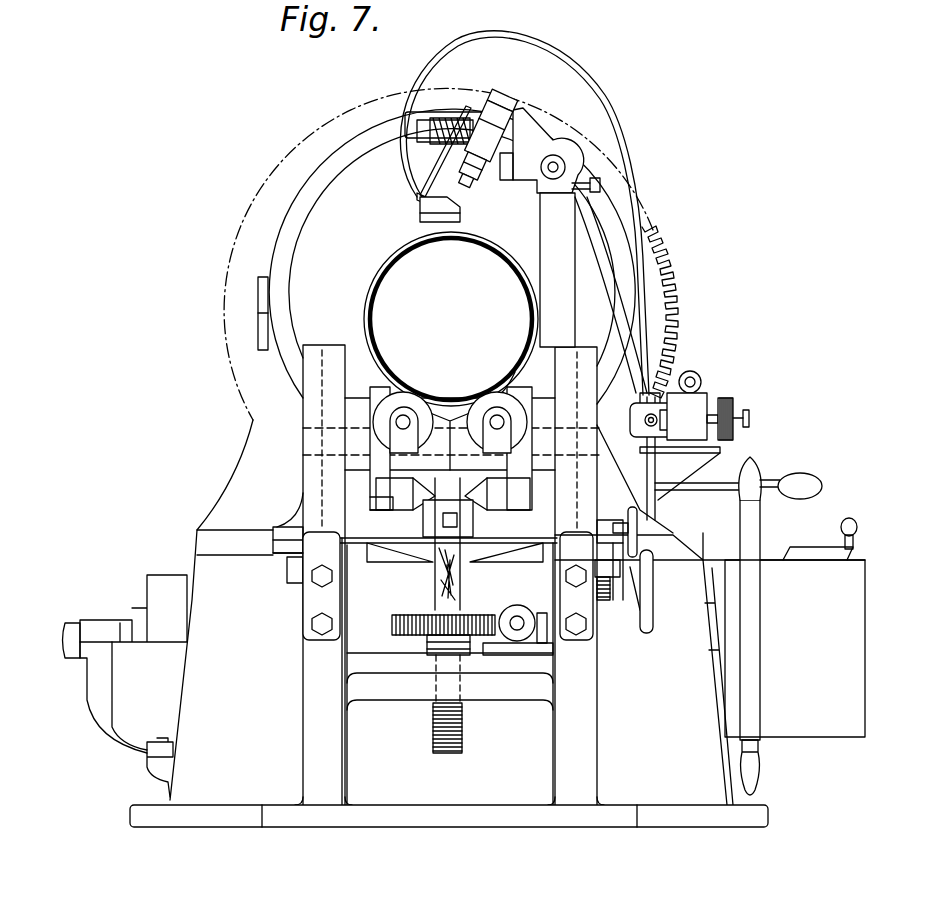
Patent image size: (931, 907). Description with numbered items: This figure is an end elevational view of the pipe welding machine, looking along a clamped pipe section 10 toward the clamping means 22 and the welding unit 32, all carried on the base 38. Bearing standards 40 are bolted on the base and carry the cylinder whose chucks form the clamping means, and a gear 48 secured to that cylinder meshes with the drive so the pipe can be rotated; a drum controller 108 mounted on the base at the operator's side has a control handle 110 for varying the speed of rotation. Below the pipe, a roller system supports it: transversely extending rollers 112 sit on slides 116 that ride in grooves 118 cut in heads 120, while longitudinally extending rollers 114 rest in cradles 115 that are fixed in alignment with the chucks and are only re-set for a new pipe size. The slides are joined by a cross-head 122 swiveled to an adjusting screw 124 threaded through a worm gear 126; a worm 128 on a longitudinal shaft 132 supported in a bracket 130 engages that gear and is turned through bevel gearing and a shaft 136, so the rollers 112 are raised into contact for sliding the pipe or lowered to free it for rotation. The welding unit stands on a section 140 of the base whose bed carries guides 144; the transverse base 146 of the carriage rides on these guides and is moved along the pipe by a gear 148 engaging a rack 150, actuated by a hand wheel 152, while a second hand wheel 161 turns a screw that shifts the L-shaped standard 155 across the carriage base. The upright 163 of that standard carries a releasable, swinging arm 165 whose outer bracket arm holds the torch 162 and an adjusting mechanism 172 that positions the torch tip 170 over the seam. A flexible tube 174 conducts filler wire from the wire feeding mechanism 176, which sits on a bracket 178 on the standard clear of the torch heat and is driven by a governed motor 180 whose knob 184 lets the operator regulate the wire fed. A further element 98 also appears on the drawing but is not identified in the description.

The pipe section 10 is at (381, 264).
The clamping means 22 is at (438, 254).
The welding unit 32 is at (418, 210).
The base 38 is at (385, 828).
The bearing standard 40 is at (248, 479).
The gear 48 is at (660, 248).
The hand crank shaft 98 is at (705, 483).
The drum controller 108 is at (795, 648).
The control handle 110 is at (840, 527).
The transversely extending roller 112 is at (378, 381).
The longitudinally extending roller 114 is at (426, 410).
The cradle 115 is at (476, 452).
The slide 116 is at (353, 405).
The groove 118 is at (318, 347).
The head 120 is at (310, 469).
The cross-head 122 is at (432, 560).
The adjusting screw 124 is at (432, 738).
The worm gear 126 is at (396, 630).
The worm 128 is at (516, 605).
The bracket 130 is at (540, 655).
The shaft 132 is at (511, 617).
The shaft 136 is at (547, 640).
The section 140 is at (590, 728).
The guide 144 is at (296, 566).
The transverse base 146 is at (282, 548).
The gear 148 is at (601, 605).
The rack 150 is at (451, 600).
The hand wheel 152 is at (710, 615).
The L-shaped standard 155 is at (528, 372).
The hand wheel 161 is at (645, 546).
The torch 162 is at (508, 97).
The upright 163 is at (531, 346).
The arm 165 is at (541, 231).
The torch tip 170 is at (420, 223).
The adjusting mechanism 172 is at (475, 185).
The flexible tube 174 is at (605, 118).
The wire feeding mechanism 176 is at (672, 376).
The bracket 178 is at (680, 458).
The motor 180 is at (706, 398).
The knob 184 is at (749, 412).